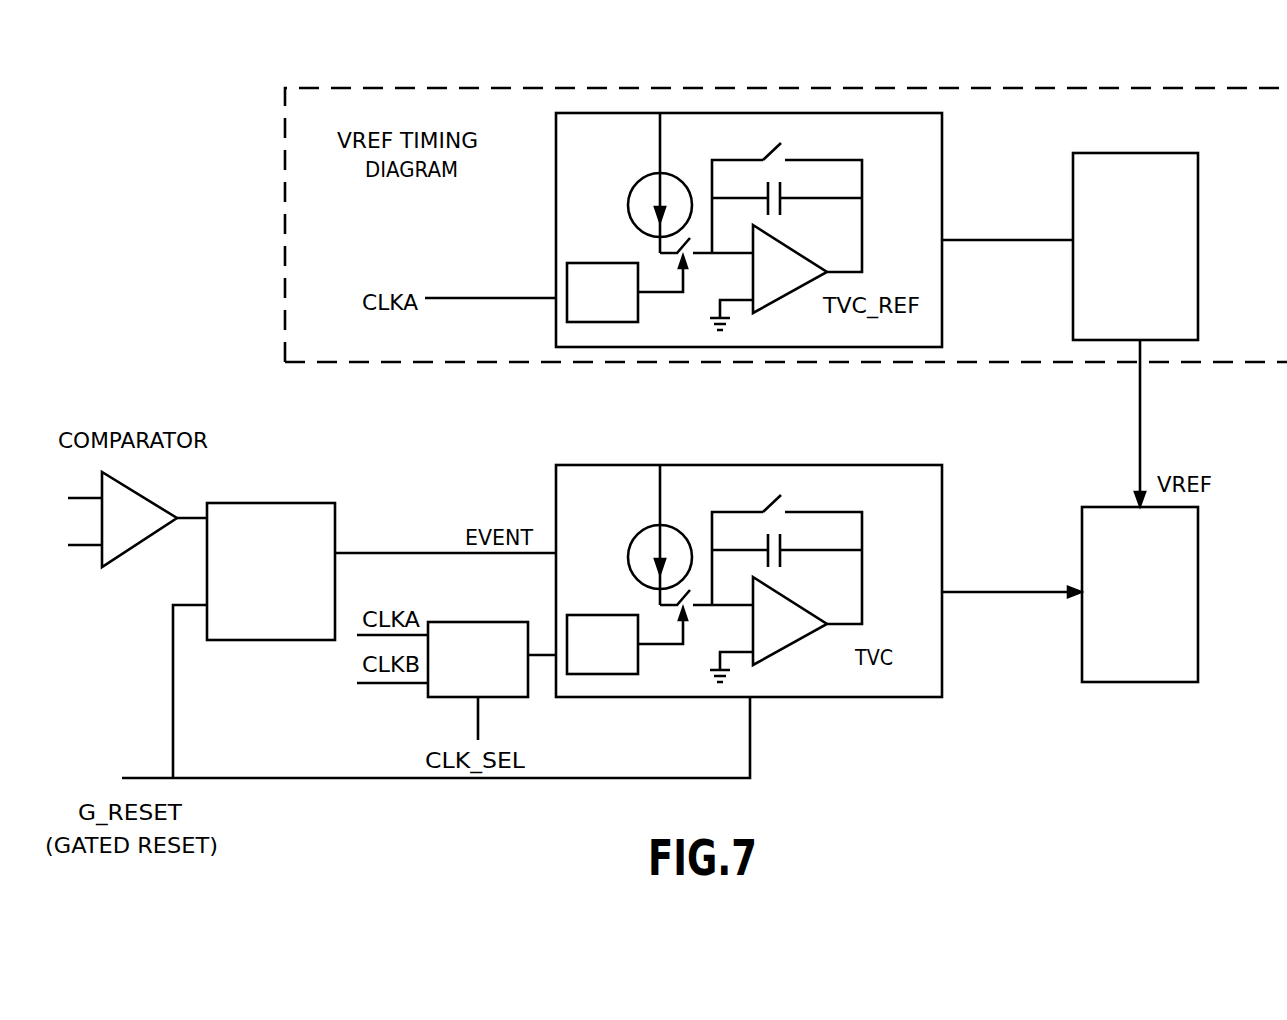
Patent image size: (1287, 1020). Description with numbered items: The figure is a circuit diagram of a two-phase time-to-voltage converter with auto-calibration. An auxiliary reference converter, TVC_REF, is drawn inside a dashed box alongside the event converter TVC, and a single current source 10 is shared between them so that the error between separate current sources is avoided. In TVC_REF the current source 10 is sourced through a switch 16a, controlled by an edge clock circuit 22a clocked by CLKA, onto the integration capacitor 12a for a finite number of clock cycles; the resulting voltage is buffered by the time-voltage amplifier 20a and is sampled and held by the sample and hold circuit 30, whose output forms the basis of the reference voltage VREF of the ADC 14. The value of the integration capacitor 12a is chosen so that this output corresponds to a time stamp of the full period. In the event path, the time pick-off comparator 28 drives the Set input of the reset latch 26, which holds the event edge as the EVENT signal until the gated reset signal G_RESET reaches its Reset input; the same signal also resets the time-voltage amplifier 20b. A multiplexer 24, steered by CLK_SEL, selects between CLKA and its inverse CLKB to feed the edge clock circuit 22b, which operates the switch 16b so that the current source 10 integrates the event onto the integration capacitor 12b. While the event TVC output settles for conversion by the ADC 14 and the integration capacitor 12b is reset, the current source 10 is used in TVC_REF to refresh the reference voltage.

The current source 10 is at (631, 192).
The integration capacitor 12a is at (783, 192).
The integration capacitor 12b is at (783, 544).
The ADC 14 is at (1198, 657).
The switch 16a is at (688, 238).
The switch 16b is at (688, 590).
The time-voltage amplifier 20a is at (780, 305).
The time-voltage amplifier 20b is at (785, 657).
The edge clock circuit 22a is at (618, 322).
The edge clock circuit 22b is at (616, 674).
The multiplexer 24 is at (448, 697).
The reset latch 26 is at (256, 503).
The time pick-off comparator 28 is at (146, 542).
The sample and hold circuit 30 is at (1198, 193).